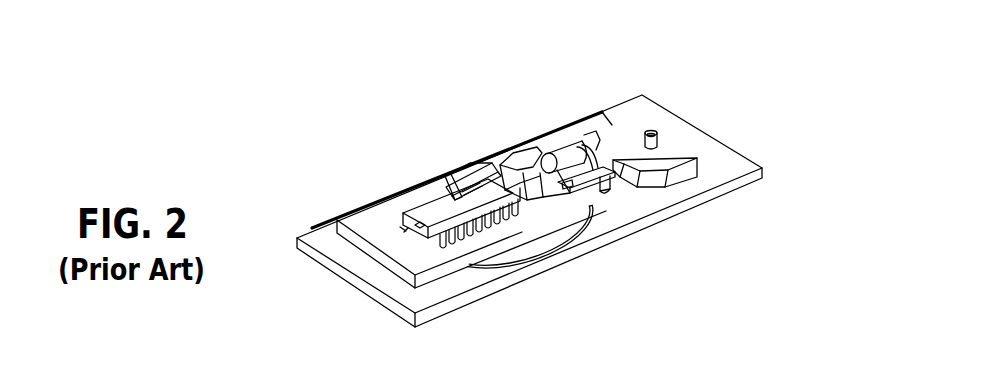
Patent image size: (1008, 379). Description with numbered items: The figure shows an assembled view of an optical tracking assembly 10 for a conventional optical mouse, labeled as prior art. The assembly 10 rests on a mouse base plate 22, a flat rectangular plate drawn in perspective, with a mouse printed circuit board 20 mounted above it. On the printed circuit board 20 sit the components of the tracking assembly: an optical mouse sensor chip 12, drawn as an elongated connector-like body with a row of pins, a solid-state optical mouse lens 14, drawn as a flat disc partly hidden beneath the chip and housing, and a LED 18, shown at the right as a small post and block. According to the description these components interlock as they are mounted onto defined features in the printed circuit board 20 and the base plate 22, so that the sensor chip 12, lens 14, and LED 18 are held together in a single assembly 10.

The optical tracking assembly 10 is at (375, 113).
The optical mouse sensor chip 12 is at (440, 217).
The solid-state optical mouse lens 14 is at (587, 223).
The LED 18 is at (607, 159).
The mouse printed circuit board 20 is at (611, 125).
The mouse base plate 22 is at (355, 280).